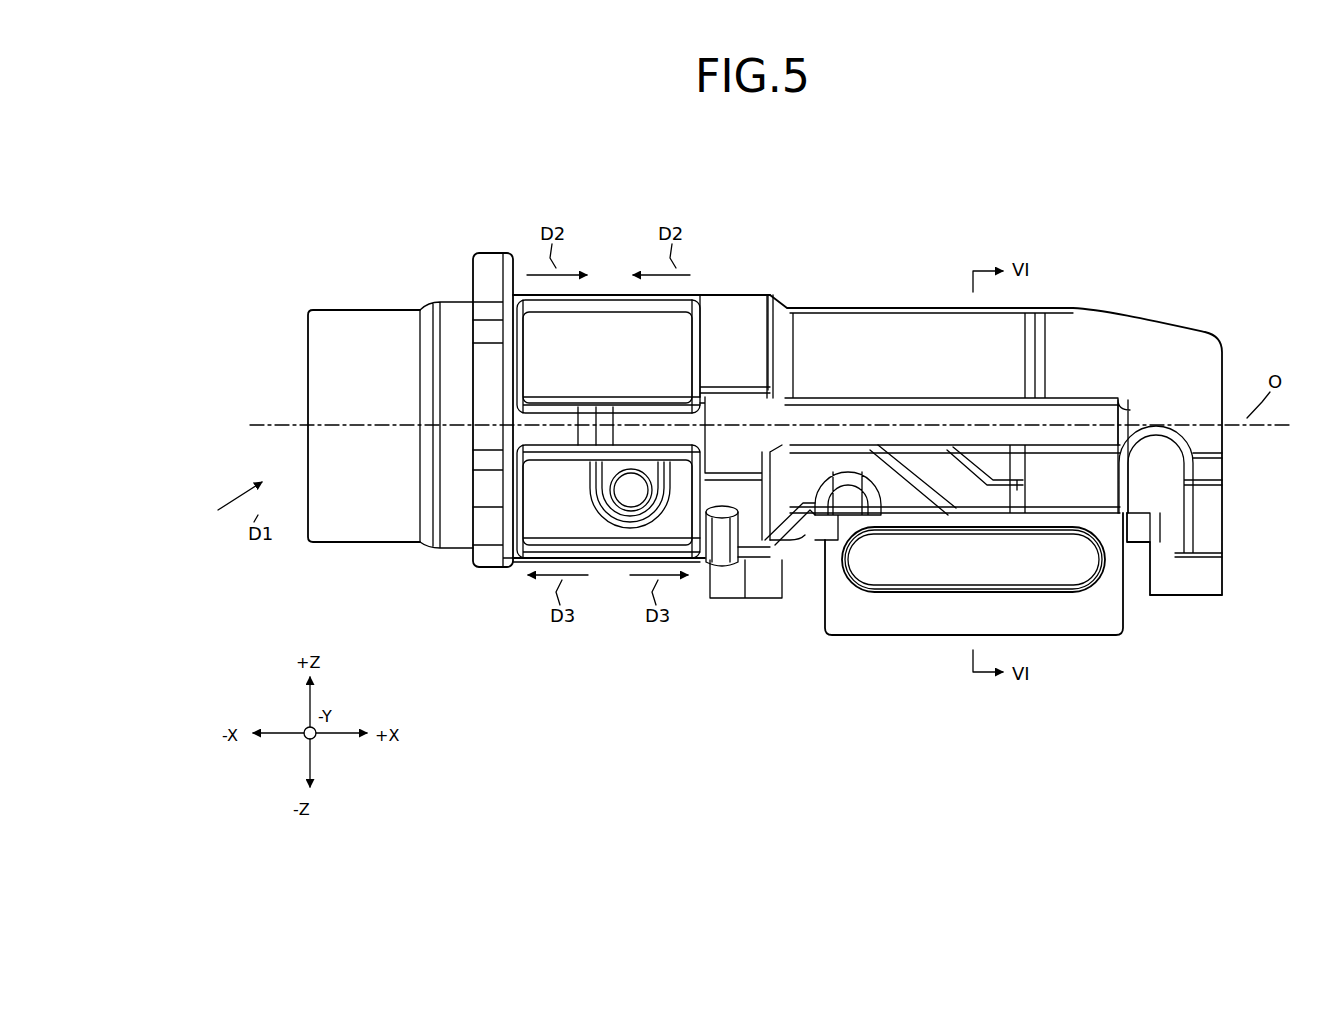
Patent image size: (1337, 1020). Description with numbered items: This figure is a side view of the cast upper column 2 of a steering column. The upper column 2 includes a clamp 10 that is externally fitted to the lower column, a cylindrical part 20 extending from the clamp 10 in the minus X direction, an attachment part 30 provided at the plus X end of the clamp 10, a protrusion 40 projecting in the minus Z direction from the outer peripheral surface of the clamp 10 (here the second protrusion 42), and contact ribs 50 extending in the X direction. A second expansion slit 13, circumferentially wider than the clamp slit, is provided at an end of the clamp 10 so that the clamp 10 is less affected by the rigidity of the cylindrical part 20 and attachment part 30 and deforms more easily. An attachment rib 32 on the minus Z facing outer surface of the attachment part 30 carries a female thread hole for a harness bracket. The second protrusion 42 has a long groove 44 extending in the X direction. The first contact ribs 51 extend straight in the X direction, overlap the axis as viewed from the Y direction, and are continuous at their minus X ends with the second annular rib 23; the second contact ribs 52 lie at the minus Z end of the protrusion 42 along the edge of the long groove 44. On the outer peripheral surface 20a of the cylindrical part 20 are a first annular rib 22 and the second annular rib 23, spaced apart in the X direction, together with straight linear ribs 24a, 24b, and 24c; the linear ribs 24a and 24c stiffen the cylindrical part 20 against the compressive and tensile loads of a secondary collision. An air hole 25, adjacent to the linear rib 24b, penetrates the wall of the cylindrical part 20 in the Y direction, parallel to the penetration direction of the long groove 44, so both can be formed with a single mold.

The upper column 2 is at (1128, 188).
The clamp 10 is at (940, 222).
The cylindrical part 20 is at (640, 222).
The outer peripheral surface 20a is at (460, 305).
The first annular rib 22 is at (493, 253).
The second annular rib 23 is at (748, 300).
The linear rib 24a is at (605, 298).
The linear rib 24b is at (548, 440).
The linear rib 24c is at (602, 560).
The air hole 25 is at (630, 528).
The attachment part 30 is at (1175, 300).
The second expansion slit 13 is at (1165, 465).
The attachment rib 32 is at (1210, 598).
The protrusion 40 is at (914, 586).
The second protrusion 42 is at (825, 650).
The long groove 44 is at (1010, 560).
The contact rib 50 is at (943, 473).
The first contact rib 51 is at (890, 410).
The second contact rib 52 is at (898, 625).